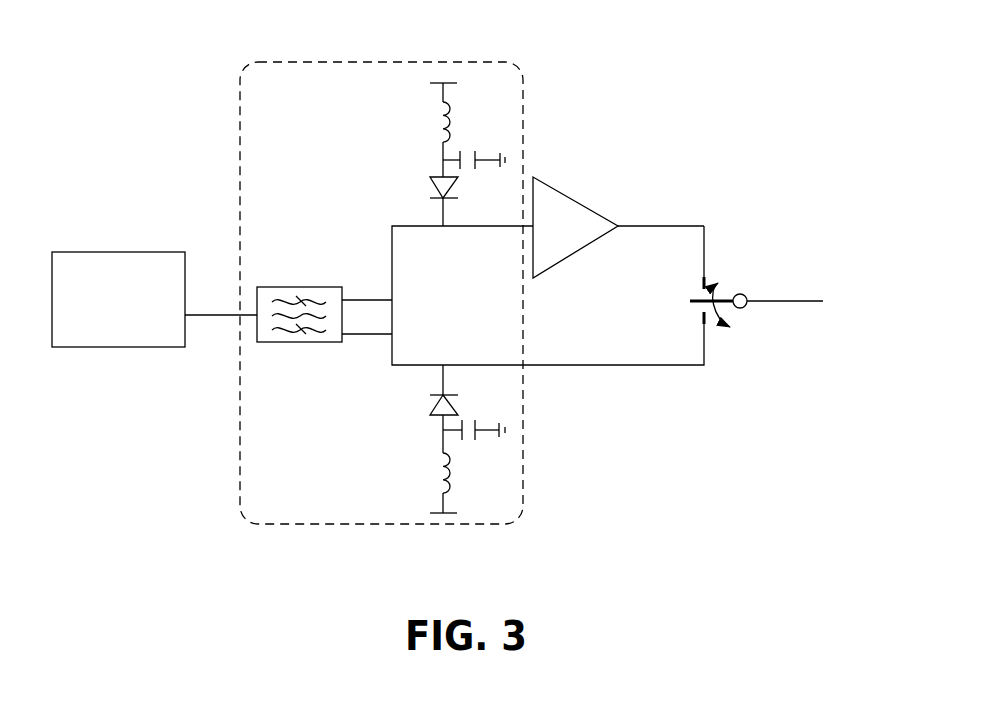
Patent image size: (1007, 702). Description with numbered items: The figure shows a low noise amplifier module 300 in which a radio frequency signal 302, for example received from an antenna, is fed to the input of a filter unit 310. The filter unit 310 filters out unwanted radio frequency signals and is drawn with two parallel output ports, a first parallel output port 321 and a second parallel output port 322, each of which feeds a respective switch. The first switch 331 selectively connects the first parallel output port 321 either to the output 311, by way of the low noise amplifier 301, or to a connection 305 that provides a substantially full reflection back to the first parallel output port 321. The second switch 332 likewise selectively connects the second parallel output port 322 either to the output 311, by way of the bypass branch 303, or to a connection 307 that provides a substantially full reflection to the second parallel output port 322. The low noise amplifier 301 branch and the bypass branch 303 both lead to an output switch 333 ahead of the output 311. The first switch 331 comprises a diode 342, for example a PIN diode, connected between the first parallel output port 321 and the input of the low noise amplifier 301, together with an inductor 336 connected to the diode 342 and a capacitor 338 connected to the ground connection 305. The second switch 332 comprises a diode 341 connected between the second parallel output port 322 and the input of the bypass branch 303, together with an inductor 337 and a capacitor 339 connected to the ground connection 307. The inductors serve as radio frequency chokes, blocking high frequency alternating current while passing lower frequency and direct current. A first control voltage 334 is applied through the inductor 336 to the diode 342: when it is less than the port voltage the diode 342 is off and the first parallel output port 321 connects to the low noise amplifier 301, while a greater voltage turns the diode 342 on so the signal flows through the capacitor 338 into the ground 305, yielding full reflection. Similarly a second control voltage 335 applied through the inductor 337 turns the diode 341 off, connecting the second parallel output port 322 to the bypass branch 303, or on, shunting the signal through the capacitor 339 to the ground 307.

The low noise amplifier module 300 is at (197, 418).
The low noise amplifier 301 is at (568, 215).
The radio frequency signal 302 is at (75, 348).
The bypass branch 303 is at (573, 366).
The connection providing substantially full reflection (ground) 305 is at (510, 153).
The connection providing substantially full reflection (ground) 307 is at (510, 430).
The filter unit 310 is at (270, 270).
The output 311 is at (778, 280).
The first parallel output port 321 is at (373, 295).
The second parallel output port 322 is at (378, 338).
The switch 1 331 is at (462, 261).
The switch 2 332 is at (445, 330).
The output switch 333 is at (667, 282).
The control voltage Vctr1 334 is at (390, 102).
The control voltage Vctr2 335 is at (402, 493).
The inductor 336 is at (459, 124).
The inductor 337 is at (458, 482).
The capacitor 338 is at (468, 175).
The capacitor 339 is at (473, 420).
The diode 341 is at (425, 412).
The diode 342 is at (427, 192).